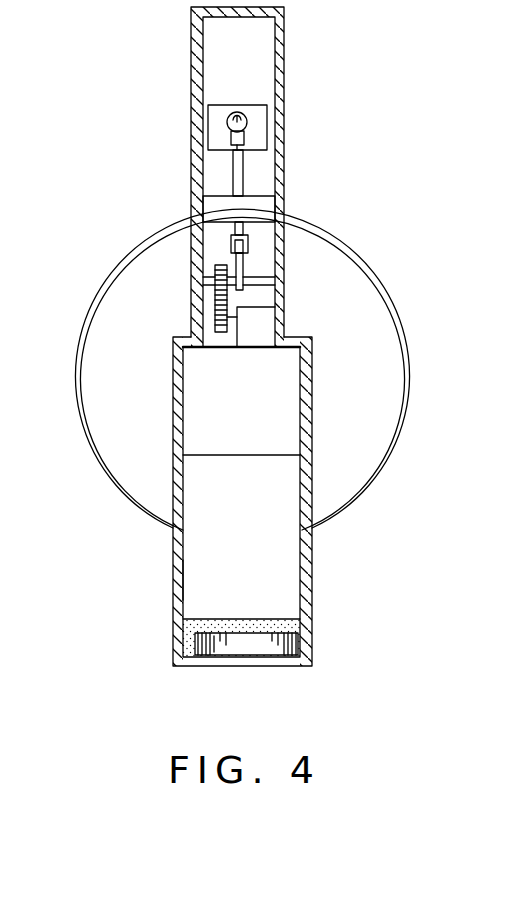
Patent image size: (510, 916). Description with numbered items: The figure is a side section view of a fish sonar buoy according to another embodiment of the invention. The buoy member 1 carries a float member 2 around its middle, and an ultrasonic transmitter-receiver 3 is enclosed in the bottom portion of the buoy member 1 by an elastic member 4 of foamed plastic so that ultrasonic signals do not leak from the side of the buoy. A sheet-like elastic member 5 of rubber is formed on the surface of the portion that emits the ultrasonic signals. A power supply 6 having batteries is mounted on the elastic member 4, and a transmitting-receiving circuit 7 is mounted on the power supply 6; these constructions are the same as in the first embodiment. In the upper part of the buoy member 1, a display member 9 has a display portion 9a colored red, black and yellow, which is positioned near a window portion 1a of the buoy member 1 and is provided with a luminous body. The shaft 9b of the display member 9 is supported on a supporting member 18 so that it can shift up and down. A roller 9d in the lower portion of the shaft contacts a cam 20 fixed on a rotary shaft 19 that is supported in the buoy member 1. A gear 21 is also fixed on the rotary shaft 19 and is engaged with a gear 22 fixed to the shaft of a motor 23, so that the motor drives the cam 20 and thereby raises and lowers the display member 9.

The buoy member 1 is at (317, 573).
The window portion 1a is at (284, 80).
The float member 2 is at (385, 298).
The ultrasonic transmitter-receiver 3 is at (262, 650).
The elastic member 4 is at (302, 637).
The sheet-like elastic member 5 is at (210, 660).
The power supply 6 is at (195, 578).
The transmitting-receiving circuit 7 is at (300, 403).
The display member 9 is at (218, 168).
The display portion 9a is at (252, 131).
The shaft 9b is at (243, 162).
The roller 9d is at (248, 243).
The supporting member 18 is at (284, 205).
The rotary shaft 19 is at (272, 286).
The cam 20 is at (262, 277).
The gear 21 is at (215, 270).
The gear 22 is at (230, 317).
The motor 23 is at (272, 313).